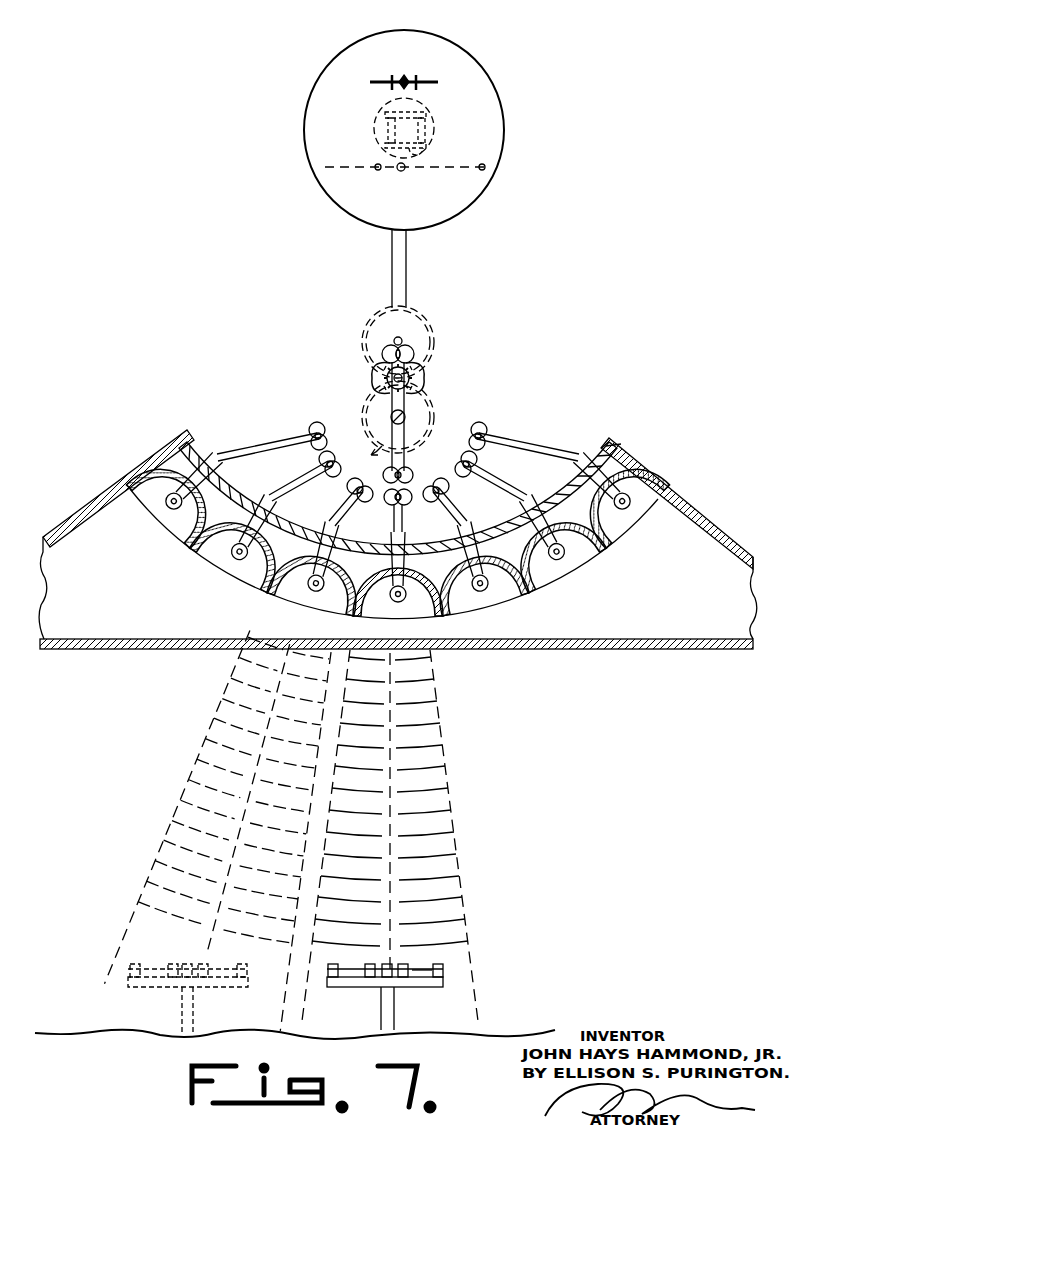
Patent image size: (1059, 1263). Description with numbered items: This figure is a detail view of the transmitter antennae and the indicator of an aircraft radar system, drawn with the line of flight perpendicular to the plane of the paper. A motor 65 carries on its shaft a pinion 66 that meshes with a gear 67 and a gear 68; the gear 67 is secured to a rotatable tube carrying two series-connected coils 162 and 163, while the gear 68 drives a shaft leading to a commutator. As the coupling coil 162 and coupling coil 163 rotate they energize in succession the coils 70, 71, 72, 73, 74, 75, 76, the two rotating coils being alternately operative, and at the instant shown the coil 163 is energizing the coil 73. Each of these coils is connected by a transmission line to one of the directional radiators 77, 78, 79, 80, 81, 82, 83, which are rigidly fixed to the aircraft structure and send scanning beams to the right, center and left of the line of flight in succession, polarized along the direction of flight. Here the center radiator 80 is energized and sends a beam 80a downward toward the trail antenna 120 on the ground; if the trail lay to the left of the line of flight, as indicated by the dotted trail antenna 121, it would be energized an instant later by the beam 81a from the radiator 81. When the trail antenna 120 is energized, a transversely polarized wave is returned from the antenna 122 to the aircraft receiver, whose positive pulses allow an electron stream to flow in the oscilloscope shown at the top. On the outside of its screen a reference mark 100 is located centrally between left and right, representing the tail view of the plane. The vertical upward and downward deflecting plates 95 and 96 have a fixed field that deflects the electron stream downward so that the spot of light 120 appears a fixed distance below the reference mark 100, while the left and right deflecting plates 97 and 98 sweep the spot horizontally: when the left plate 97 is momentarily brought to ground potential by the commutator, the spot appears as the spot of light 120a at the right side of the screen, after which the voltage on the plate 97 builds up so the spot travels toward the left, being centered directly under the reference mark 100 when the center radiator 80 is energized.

The reference mark 100 is at (405, 76).
The vertical upward deflecting plate 95 is at (390, 112).
The vertical downward deflecting plate 96 is at (428, 152).
The left deflecting plate 97 is at (388, 133).
The right deflecting plate 98 is at (428, 126).
The trail antenna 120 is at (399, 172).
The spot of light 120a is at (482, 171).
The gear 68 is at (374, 324).
The coil 162 is at (412, 356).
The motor 65 is at (374, 378).
The pinion 66 is at (413, 378).
The gear 67 is at (372, 410).
The coil 163 is at (408, 476).
The coil 70 is at (487, 430).
The coil 71 is at (476, 465).
The coil 72 is at (447, 490).
The coil 73 is at (391, 501).
The coil 74 is at (348, 490).
The coil 75 is at (321, 462).
The coil 76 is at (309, 432).
The directional radiator 77 is at (622, 510).
The directional radiator 78 is at (556, 558).
The directional radiator 79 is at (477, 590).
The center radiator 80 is at (395, 603).
The directional radiator 81 is at (312, 590).
The directional radiator 82 is at (238, 558).
The directional radiator 83 is at (176, 502).
The beam 80a is at (446, 857).
The beam 81a is at (241, 824).
The trail antenna 121 is at (186, 975).
The antenna 122 is at (421, 977).